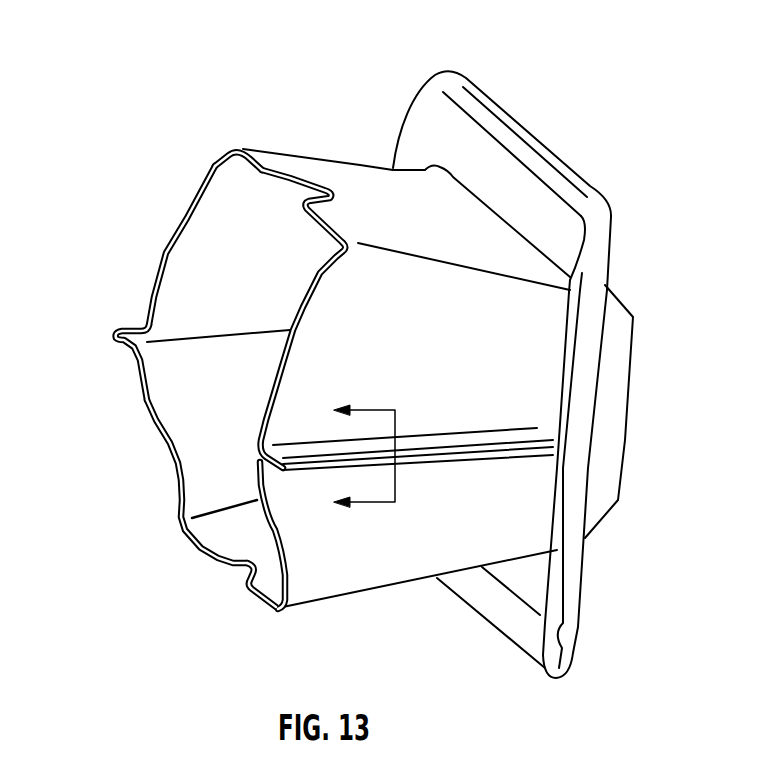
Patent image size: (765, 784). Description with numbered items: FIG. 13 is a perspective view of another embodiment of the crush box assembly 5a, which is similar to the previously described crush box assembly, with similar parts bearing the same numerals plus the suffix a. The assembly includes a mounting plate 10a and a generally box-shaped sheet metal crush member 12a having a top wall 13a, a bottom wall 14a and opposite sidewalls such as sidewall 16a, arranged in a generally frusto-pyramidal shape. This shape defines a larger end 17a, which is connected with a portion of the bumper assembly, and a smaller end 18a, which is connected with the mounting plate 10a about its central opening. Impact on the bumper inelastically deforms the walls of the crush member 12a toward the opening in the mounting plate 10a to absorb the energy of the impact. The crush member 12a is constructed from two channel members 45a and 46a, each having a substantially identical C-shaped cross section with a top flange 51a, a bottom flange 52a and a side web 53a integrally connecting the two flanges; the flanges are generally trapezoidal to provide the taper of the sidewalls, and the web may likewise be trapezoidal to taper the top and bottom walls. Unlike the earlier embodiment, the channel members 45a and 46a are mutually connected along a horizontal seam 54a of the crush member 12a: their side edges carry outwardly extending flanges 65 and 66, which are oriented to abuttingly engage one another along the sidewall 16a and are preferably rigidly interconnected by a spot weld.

The crush box assembly 5a is at (367, 339).
The mounting plate 10a is at (430, 74).
The crush member 12a is at (210, 163).
The top wall 13a is at (307, 167).
The bottom wall 14a is at (200, 553).
The sidewall 16a is at (182, 218).
The larger end 17a is at (560, 304).
The smaller end 18a is at (153, 423).
The channel member 45a is at (367, 190).
The channel member 46a is at (357, 575).
The top flange 51a is at (445, 364).
The bottom flange 52a is at (248, 262).
The side web 53a is at (517, 145).
The horizontal seam 54a is at (132, 330).
The outwardly extending flange 65 is at (458, 445).
The outwardly extending flange 66 is at (427, 463).